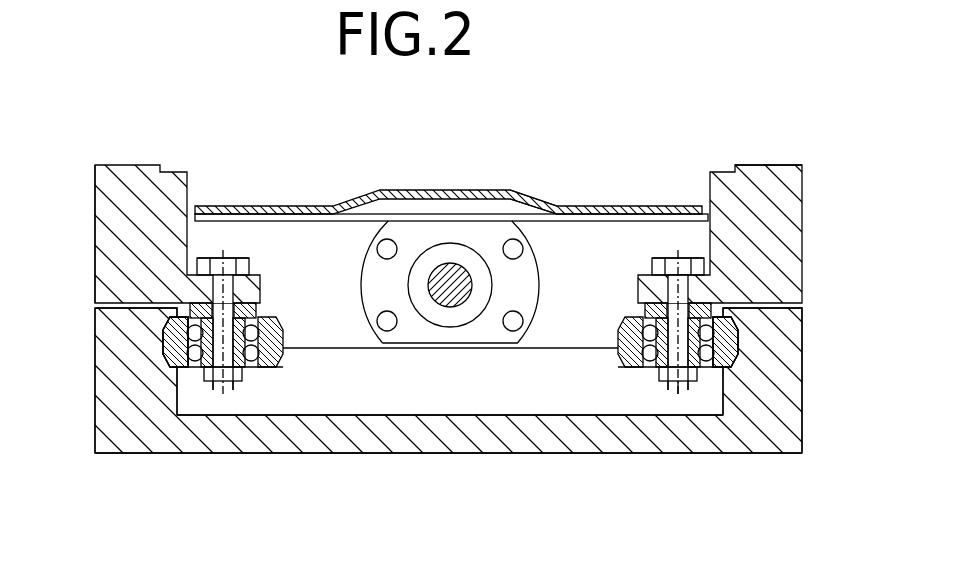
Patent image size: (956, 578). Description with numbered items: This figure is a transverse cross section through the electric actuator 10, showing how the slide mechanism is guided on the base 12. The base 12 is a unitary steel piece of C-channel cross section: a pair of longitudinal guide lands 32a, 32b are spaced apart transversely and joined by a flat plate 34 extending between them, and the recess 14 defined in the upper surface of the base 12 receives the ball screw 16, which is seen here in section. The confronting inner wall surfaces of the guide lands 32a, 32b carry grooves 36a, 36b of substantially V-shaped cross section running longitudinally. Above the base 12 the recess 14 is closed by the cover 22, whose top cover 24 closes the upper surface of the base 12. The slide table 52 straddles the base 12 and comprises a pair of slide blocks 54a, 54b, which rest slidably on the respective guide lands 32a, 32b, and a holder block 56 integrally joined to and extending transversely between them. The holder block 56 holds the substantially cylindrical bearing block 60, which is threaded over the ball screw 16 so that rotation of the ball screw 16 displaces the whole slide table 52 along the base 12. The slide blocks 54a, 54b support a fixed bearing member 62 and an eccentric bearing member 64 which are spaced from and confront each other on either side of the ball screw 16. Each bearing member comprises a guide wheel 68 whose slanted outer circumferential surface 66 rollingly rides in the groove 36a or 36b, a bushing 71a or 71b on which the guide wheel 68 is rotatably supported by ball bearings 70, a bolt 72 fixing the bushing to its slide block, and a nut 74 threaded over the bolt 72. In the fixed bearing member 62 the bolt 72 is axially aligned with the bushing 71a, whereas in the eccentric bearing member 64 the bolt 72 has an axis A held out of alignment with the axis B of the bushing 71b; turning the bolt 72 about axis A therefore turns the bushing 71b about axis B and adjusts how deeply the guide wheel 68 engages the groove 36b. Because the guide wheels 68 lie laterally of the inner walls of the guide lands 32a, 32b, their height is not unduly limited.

The electric actuator 10 is at (669, 70).
The base 12 is at (253, 458).
The recess 14 is at (400, 407).
The ball screw 16 is at (448, 265).
The cover 22 is at (522, 181).
The top cover 24 is at (385, 198).
The longitudinal guide land 32a is at (110, 328).
The longitudinal guide land 32b is at (788, 332).
The flat plate 34 is at (483, 440).
The groove 36a is at (175, 363).
The groove 36b is at (738, 360).
The slide table 52 is at (778, 158).
The slide block 54a is at (118, 186).
The slide block 54b is at (790, 205).
The holder block 56 is at (300, 232).
The bearing block 60 is at (482, 240).
The fixed bearing member 62 is at (192, 368).
The eccentric bearing member 64 is at (649, 394).
The slanted outer circumferential surface 66 is at (283, 349).
The guide wheel 68 is at (268, 318).
The ball bearing 70 is at (201, 391).
The bushing 71a is at (240, 257).
The bushing 71b is at (690, 257).
The bolt 72 is at (205, 257).
The nut 74 is at (250, 376).
The axis of bolt A is at (672, 257).
The axis of bushing B is at (685, 395).